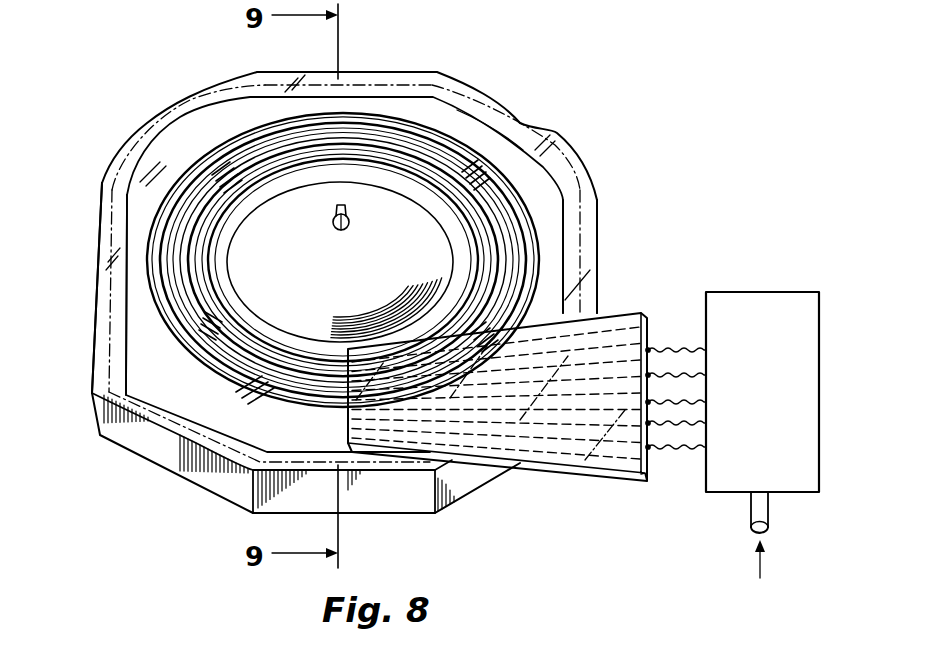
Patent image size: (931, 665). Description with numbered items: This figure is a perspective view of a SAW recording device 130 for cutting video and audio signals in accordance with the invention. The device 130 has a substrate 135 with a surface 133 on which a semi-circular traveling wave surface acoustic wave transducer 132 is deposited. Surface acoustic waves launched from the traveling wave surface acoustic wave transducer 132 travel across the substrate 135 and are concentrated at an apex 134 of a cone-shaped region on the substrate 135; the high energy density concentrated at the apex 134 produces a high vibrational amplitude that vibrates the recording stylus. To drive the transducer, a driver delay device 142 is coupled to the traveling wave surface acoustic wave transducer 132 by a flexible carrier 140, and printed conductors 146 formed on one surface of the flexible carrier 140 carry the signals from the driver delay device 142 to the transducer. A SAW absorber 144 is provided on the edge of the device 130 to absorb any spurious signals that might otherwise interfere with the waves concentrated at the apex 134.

The device 130 is at (524, 72).
The traveling wave surface acoustic wave transducer 132 is at (543, 148).
The surface 133 is at (560, 216).
The apex 134 is at (352, 226).
The substrate 135 is at (128, 255).
The flexible carrier 140 is at (617, 316).
The driver delay device 142 is at (804, 487).
The SAW absorber 144 is at (115, 387).
The printed conductors 146 is at (650, 449).